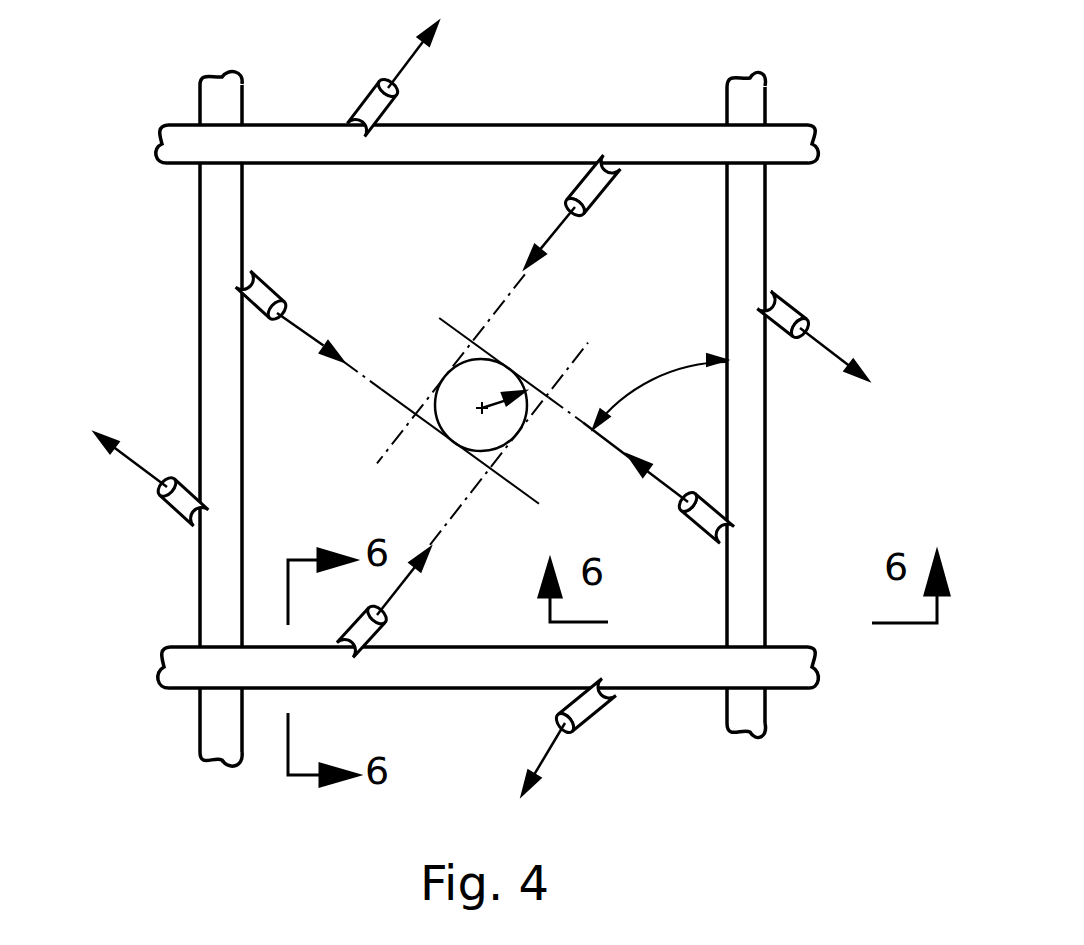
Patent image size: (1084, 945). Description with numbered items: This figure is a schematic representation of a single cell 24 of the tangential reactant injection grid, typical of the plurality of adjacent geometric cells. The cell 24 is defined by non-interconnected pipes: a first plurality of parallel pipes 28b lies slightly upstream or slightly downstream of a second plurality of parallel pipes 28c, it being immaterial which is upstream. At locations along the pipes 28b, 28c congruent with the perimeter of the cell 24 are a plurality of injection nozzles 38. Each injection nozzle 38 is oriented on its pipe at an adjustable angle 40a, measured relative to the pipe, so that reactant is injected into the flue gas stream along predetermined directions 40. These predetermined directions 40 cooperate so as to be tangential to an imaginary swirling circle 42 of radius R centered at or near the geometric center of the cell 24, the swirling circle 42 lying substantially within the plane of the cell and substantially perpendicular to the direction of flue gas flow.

The cell 24 is at (480, 419).
The first plurality of parallel pipes 28b is at (200, 204).
The second plurality of parallel pipes 28c is at (595, 125).
The injection nozzles 38 is at (365, 95).
The predetermined directions 40 is at (400, 65).
The adjustable angle 40a is at (643, 388).
The swirling circle 42 is at (518, 433).